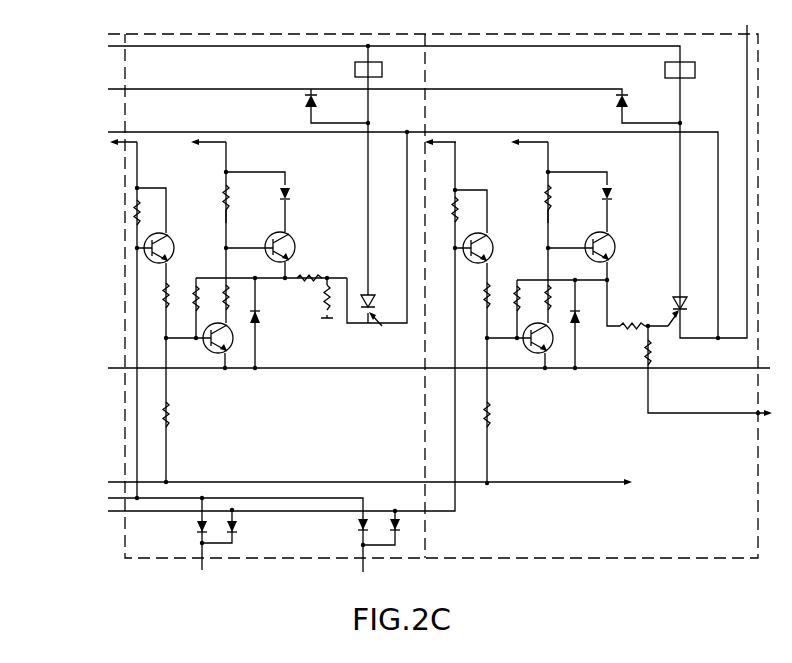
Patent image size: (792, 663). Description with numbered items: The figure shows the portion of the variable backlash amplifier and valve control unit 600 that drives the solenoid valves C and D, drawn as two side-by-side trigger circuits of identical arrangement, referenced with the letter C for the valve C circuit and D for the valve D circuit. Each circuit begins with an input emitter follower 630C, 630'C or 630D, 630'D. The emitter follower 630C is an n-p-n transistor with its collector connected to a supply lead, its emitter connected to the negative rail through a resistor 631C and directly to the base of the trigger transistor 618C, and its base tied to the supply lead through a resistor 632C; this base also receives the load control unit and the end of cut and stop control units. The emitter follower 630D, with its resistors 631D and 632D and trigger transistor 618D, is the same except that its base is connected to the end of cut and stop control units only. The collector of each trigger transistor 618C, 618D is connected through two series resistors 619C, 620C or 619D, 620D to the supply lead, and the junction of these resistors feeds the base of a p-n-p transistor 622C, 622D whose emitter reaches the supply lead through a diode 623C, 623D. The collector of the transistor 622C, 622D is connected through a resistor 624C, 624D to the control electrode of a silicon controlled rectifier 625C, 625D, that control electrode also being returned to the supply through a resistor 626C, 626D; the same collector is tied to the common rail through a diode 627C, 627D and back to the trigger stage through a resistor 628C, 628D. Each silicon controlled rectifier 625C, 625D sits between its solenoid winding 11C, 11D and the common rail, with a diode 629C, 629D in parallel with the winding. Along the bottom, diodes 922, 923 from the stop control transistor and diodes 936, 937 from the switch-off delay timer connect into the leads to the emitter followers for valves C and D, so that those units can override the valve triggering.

The solenoid winding 11C is at (355, 67).
The solenoid winding 11D is at (695, 70).
The diode 629C is at (305, 107).
The diode 629D is at (616, 107).
The resistor 632C is at (135, 212).
The resistor 632D is at (458, 212).
The resistor 620C is at (228, 213).
The resistor 620D is at (550, 213).
The diode 623C is at (291, 192).
The diode 623D is at (613, 195).
The p-n-p transistor 622C is at (288, 238).
The p-n-p transistor 622D is at (608, 240).
The input emitter follower 630C is at (145, 251).
The input emitter follower 630D is at (485, 240).
The resistor 628C is at (195, 290).
The resistor 628D is at (517, 292).
The resistor 619C is at (228, 292).
The resistor 619D is at (550, 292).
The resistor 624C is at (308, 277).
The resistor 624D is at (636, 311).
The input emitter follower 630'C is at (102, 306).
The input emitter follower 630'D is at (422, 343).
The diode 627C is at (262, 324).
The diode 627D is at (582, 324).
The resistor 626C is at (323, 306).
The resistor 626D is at (654, 347).
The silicon controlled rectifier 625C is at (374, 304).
The silicon controlled rectifier 625D is at (679, 294).
The transistor 618C is at (233, 350).
The transistor 618D is at (545, 350).
The resistor 631C is at (171, 418).
The resistor 631D is at (492, 420).
The diode 922 is at (198, 526).
The diode 923 is at (238, 525).
The diode 936 is at (359, 521).
The diode 937 is at (402, 524).
The variable backlash amplifier and valve control unit 600 is at (536, 576).